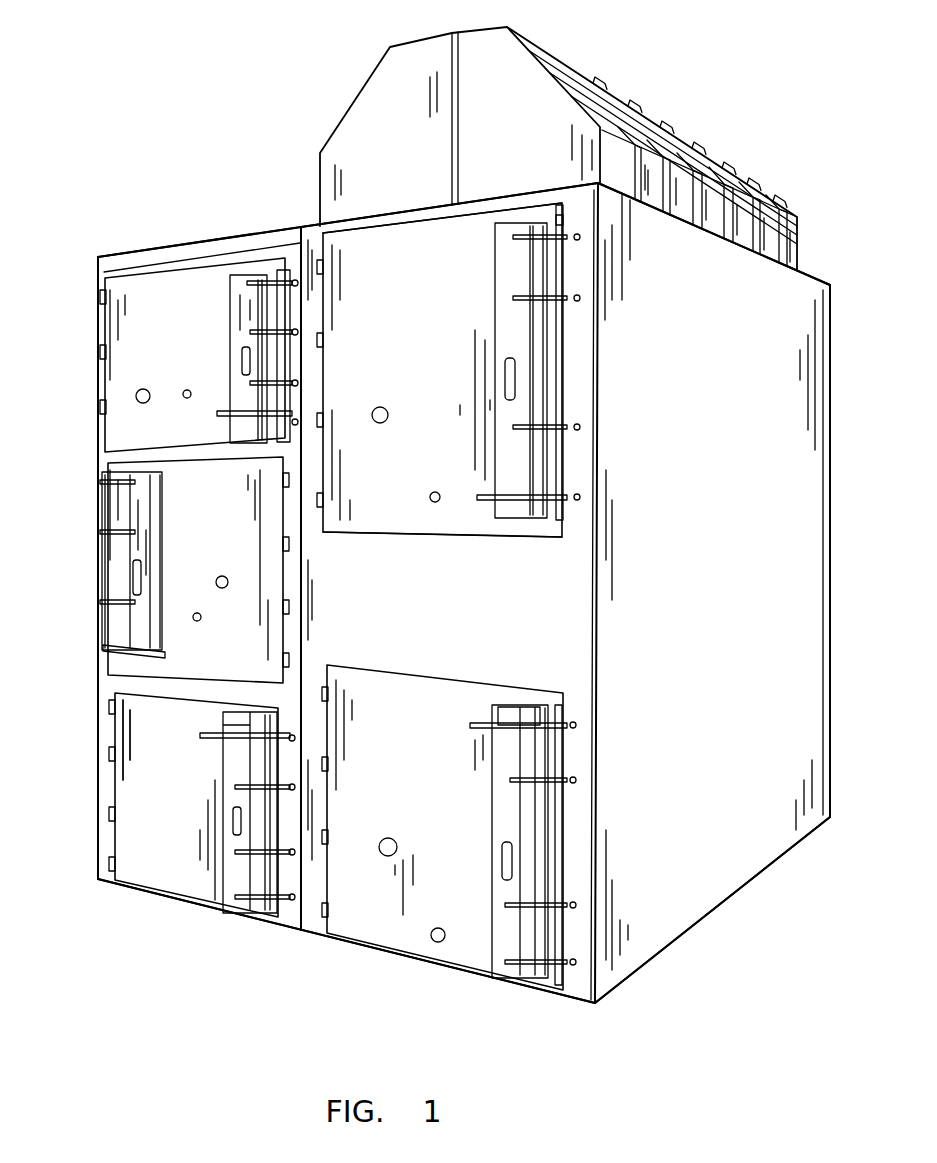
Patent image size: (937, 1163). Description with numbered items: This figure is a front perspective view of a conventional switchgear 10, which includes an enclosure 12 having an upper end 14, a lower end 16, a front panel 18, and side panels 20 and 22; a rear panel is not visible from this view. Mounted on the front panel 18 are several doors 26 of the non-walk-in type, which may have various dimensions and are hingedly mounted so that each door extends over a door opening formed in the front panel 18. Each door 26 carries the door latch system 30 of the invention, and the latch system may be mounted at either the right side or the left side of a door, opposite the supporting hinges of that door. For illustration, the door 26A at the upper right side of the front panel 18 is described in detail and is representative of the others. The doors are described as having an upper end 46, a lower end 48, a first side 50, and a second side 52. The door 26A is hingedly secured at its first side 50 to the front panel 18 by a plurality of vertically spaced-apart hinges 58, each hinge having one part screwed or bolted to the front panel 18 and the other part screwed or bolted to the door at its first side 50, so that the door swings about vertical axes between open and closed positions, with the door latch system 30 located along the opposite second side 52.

The switchgear 10 is at (208, 196).
The enclosure 12 is at (170, 246).
The upper end 14 is at (680, 88).
The lower end 16 is at (377, 987).
The front panel 18 is at (422, 606).
The side panel 20 is at (88, 680).
The side panel 22 is at (703, 654).
The doors 26 is at (162, 360).
The door 26A is at (439, 370).
The door latch system 30 is at (245, 279).
The upper end 46 is at (423, 222).
The lower end 48 is at (385, 533).
The first side 50 is at (323, 387).
The second side 52 is at (563, 213).
The hinges 58 is at (325, 333).